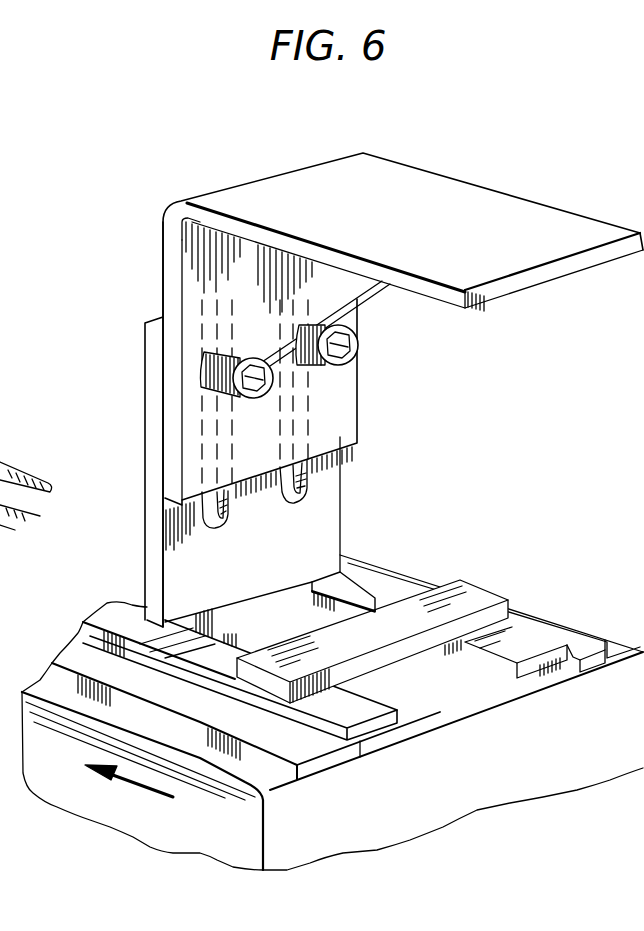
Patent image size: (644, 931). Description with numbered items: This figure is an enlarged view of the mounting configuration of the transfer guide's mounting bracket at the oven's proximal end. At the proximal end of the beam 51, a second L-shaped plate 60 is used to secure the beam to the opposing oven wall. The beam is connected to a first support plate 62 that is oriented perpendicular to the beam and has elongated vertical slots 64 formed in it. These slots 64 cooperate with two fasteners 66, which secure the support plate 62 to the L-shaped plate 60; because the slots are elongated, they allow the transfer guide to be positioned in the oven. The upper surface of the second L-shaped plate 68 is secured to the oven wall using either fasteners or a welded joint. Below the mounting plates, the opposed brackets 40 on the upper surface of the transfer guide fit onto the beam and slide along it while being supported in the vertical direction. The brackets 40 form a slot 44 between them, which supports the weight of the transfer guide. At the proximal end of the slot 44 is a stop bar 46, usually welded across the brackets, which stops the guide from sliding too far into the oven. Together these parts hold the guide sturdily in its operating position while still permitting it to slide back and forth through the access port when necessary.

The bracket 40 is at (108, 611).
The slot 44 is at (455, 701).
The stop bar 46 is at (472, 597).
The proximal end of the beam 51 is at (365, 589).
The L-shaped plate 60 is at (403, 390).
The first support plate 62 is at (300, 545).
The elongated vertical slots 64 is at (240, 518).
The fasteners 66 is at (262, 382).
The upper surface of the second L-shaped plate 68 is at (426, 226).